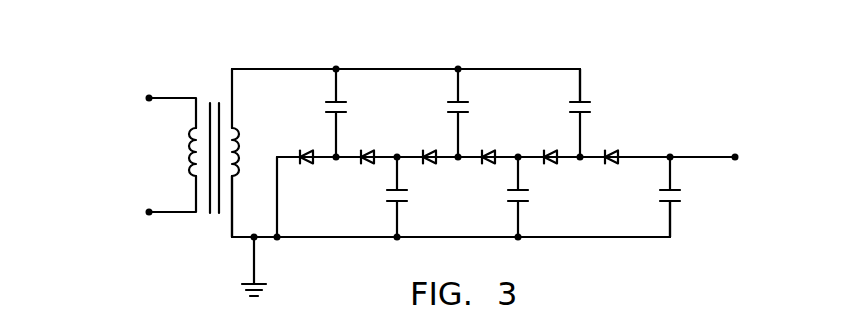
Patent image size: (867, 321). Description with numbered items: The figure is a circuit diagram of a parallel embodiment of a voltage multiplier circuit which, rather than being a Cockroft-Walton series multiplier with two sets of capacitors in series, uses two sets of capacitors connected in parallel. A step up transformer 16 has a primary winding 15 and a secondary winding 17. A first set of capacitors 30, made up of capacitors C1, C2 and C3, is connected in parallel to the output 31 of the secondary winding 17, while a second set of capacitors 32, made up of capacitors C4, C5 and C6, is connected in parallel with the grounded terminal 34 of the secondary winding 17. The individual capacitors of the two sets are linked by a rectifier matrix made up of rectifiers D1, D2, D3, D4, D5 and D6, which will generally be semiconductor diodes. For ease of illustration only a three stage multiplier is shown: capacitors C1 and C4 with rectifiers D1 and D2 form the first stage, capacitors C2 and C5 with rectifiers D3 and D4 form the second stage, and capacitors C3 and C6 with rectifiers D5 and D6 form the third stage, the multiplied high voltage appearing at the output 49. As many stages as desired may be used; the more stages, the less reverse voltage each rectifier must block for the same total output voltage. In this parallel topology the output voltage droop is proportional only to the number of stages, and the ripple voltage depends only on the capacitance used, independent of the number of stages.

The primary winding 15 is at (188, 171).
The step up transformer 16 is at (208, 124).
The secondary winding 17 is at (244, 152).
The first set of capacitors 30 is at (617, 99).
The output 31 is at (256, 69).
The second set of capacitors 32 is at (711, 211).
The grounded terminal 34 is at (237, 240).
The output 49 is at (738, 157).
The capacitor C1 is at (320, 113).
The capacitor C2 is at (442, 113).
The capacitor C3 is at (608, 98).
The capacitor C4 is at (380, 197).
The capacitor C5 is at (502, 197).
The capacitor C6 is at (700, 203).
The rectifier D1 is at (310, 146).
The rectifier D2 is at (368, 146).
The rectifier D3 is at (433, 146).
The rectifier D4 is at (490, 146).
The rectifier D5 is at (552, 146).
The rectifier D6 is at (612, 146).